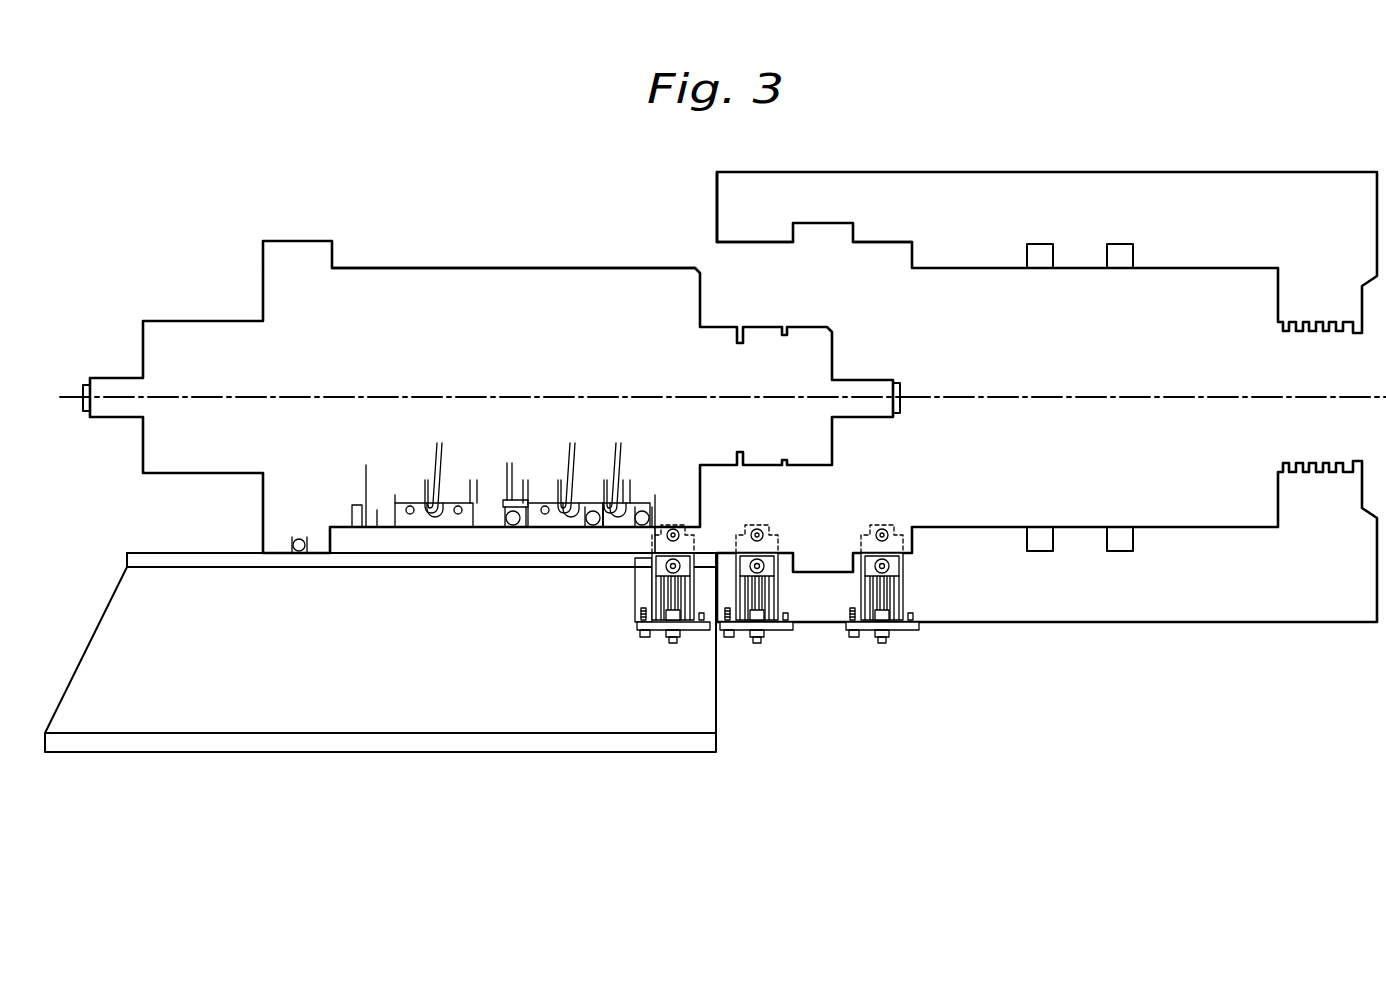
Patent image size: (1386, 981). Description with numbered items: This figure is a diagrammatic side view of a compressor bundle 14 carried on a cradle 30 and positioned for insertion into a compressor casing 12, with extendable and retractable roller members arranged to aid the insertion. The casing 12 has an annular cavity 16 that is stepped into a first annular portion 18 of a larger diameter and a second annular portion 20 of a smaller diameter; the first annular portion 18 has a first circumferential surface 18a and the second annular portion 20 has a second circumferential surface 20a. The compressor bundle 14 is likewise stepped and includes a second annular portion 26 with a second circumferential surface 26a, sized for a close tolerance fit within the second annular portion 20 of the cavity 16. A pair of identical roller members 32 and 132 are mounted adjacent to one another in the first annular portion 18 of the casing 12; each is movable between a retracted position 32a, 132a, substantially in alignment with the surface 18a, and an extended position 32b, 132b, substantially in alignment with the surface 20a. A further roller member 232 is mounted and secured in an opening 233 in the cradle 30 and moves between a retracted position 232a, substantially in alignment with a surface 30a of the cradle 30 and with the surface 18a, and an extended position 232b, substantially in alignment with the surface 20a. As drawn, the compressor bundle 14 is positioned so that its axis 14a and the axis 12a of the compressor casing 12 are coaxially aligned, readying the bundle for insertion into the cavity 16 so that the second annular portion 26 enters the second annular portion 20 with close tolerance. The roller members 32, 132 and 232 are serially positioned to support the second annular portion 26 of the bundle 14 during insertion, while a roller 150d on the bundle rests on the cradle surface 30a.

The compressor casing 12 is at (1019, 367).
The axis of compressor casing 12a is at (1213, 396).
The compressor bundle 14 is at (473, 265).
The axis of compressor bundle 14a is at (400, 395).
The annular cavity 16 is at (722, 249).
The first annular portion 18 is at (875, 245).
The first circumferential surface 18a is at (776, 245).
The second annular portion 20 is at (1000, 271).
The second circumferential surface 20a is at (1148, 271).
The second annular portion 26 is at (595, 266).
The second circumferential surface 26a is at (435, 534).
The cradle 30 is at (234, 758).
The surface of cradle 30a is at (180, 552).
The roller member 32 is at (905, 584).
The retracted position 32a is at (909, 568).
The extended position 32b is at (886, 525).
The roller member 132 is at (786, 584).
The retracted position 132a is at (770, 566).
The extended position 132b is at (767, 525).
The roller 150d is at (298, 537).
The roller member 232 is at (651, 569).
The retracted position 232a is at (643, 560).
The extended position 232b is at (685, 523).
The opening 233 is at (693, 556).